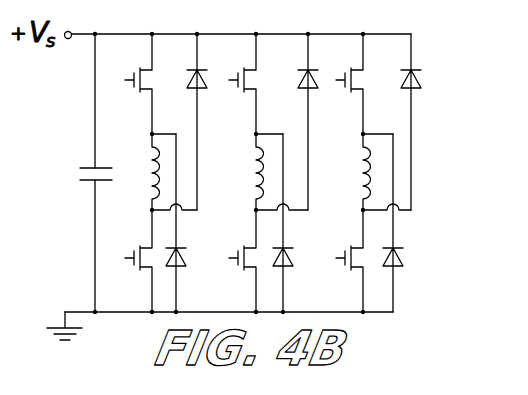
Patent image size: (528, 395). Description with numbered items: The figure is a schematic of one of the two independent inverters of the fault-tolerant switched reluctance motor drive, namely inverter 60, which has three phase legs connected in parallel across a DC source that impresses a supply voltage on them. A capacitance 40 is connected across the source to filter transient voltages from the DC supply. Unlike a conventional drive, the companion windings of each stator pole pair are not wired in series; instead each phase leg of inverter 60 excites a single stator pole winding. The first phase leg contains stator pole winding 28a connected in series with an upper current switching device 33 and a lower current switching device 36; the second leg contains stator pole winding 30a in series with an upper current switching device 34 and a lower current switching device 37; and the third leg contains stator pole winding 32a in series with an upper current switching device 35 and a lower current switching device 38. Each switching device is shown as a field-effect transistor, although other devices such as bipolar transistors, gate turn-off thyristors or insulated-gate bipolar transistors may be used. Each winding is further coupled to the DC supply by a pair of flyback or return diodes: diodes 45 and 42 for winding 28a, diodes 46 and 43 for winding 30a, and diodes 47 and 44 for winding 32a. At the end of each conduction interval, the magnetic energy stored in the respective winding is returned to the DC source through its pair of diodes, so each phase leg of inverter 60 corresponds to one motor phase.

The stator pole winding 28a is at (152, 189).
The stator pole winding 30a is at (259, 184).
The stator pole winding 32a is at (372, 178).
The upper current switching device 33 is at (147, 90).
The upper current switching device 34 is at (253, 90).
The upper current switching device 35 is at (360, 90).
The lower current switching device 36 is at (147, 269).
The lower current switching device 37 is at (247, 269).
The lower current switching device 38 is at (352, 269).
The capacitance 40 is at (92, 166).
The flyback diode 42 is at (188, 87).
The flyback diode 43 is at (300, 88).
The flyback diode 44 is at (421, 81).
The flyback diode 45 is at (184, 258).
The flyback diode 46 is at (291, 258).
The flyback diode 47 is at (403, 258).
The inverter 60 is at (419, 150).